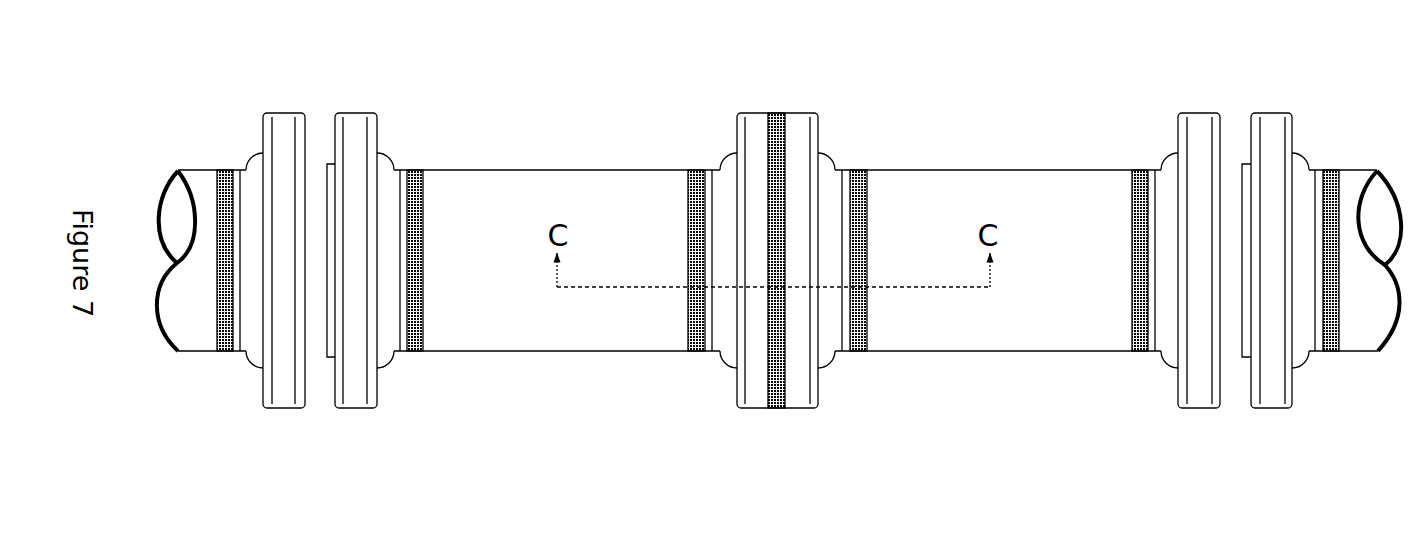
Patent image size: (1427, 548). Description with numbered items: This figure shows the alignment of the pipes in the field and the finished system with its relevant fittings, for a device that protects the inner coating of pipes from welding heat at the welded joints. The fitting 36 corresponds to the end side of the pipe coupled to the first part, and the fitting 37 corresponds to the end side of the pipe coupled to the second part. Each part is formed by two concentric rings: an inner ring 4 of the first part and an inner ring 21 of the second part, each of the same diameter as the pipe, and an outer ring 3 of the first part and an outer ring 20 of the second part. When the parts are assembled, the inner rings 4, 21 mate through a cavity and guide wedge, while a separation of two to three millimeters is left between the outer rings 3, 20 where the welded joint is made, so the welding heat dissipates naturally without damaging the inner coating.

The outer ring 3 is at (283, 125).
The inner ring 4 is at (247, 177).
The outer ring 20 is at (363, 123).
The inner ring 21 is at (392, 175).
The fitting 36 is at (692, 230).
The fitting 37 is at (864, 230).